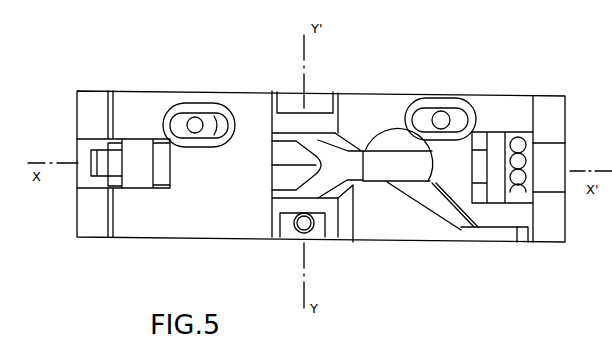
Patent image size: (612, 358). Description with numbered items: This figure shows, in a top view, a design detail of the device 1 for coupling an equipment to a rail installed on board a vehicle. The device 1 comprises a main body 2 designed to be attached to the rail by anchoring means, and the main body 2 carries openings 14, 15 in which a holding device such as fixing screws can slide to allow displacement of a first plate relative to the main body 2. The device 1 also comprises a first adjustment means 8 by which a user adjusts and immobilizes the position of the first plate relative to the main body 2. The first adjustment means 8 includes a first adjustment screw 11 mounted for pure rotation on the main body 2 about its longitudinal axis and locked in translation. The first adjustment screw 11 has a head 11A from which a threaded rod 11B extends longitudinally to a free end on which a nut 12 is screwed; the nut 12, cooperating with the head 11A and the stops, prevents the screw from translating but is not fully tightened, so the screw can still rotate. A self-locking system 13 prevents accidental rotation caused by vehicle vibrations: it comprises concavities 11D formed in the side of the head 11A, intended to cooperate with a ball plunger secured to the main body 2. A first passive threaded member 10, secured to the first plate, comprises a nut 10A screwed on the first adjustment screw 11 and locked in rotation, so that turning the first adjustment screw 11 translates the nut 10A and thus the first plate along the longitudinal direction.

The device 1 is at (430, 270).
The main body 2 is at (93, 108).
The first adjustment means 8 is at (504, 146).
The first passive threaded member 10 is at (284, 148).
The nut 10A is at (278, 178).
The first adjustment screw 11 is at (390, 153).
The head 11A is at (532, 184).
The threaded rod 11B is at (377, 172).
The concavities 11D is at (541, 160).
The nut 12 is at (115, 172).
The self-locking system 13 is at (516, 203).
The opening 14 is at (178, 117).
The opening 15 is at (452, 110).